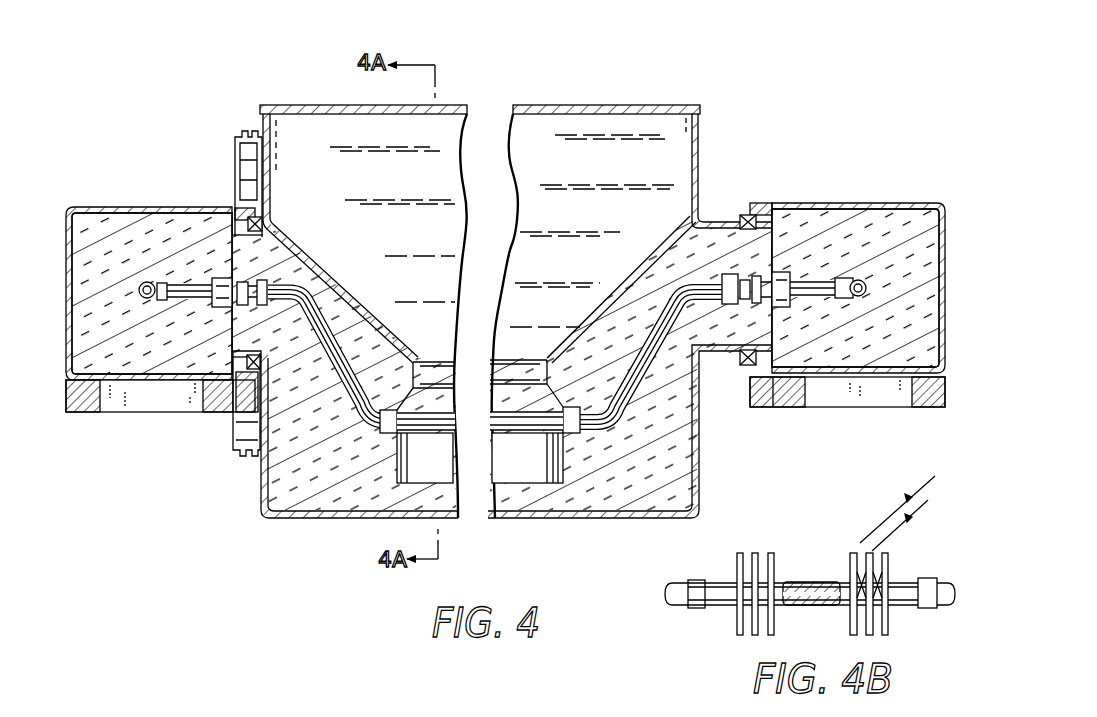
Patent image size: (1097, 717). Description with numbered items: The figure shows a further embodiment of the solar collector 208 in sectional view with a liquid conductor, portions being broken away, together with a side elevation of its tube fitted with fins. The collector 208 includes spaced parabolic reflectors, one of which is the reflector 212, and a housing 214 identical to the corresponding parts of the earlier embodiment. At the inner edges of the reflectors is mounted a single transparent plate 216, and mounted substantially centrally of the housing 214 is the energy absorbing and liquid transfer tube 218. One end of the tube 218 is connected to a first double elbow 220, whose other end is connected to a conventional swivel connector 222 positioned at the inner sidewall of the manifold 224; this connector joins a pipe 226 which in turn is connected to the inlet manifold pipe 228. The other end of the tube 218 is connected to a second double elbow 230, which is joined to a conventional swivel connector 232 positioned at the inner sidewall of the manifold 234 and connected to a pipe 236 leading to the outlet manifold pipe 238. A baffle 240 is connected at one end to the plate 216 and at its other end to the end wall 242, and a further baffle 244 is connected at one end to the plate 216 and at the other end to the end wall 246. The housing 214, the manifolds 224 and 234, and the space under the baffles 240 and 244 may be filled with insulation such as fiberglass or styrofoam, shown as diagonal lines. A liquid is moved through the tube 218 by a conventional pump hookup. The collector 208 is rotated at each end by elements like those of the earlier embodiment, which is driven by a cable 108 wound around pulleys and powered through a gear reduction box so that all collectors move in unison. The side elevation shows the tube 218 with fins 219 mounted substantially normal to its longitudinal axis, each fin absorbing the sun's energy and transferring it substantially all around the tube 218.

In FIG. 4, the cable 108 is at (243, 137).
In FIG. 4, the collector 208 is at (280, 103).
In FIG. 4, the parabolic reflector 212 is at (608, 165).
In FIG. 4, the housing 214 is at (700, 433).
In FIG. 4, the transparent plate 216 is at (437, 360).
In FIG. 4, the energy absorbing and liquid transfer tube 218 is at (537, 425).
In FIG. 4B, the energy absorbing and liquid transfer tube 218 is at (813, 581).
In FIG. 4B, the fins 219 is at (771, 553).
In FIG. 4, the first double elbow 220 is at (343, 292).
In FIG. 4, the swivel connector 222 is at (240, 283).
In FIG. 4, the manifold 224 is at (93, 207).
In FIG. 4, the pipe 226 is at (190, 300).
In FIG. 4, the inlet manifold pipe 228 is at (147, 300).
In FIG. 4, the second double elbow 230 is at (640, 368).
In FIG. 4, the swivel connector 232 is at (765, 278).
In FIG. 4, the manifold 234 is at (882, 200).
In FIG. 4, the pipe 236 is at (812, 278).
In FIG. 4, the outlet manifold pipe 238 is at (868, 291).
In FIG. 4, the baffle 240 is at (310, 247).
In FIG. 4, the end wall 242 is at (273, 187).
In FIG. 4, the baffle 244 is at (644, 257).
In FIG. 4, the end wall 246 is at (700, 140).